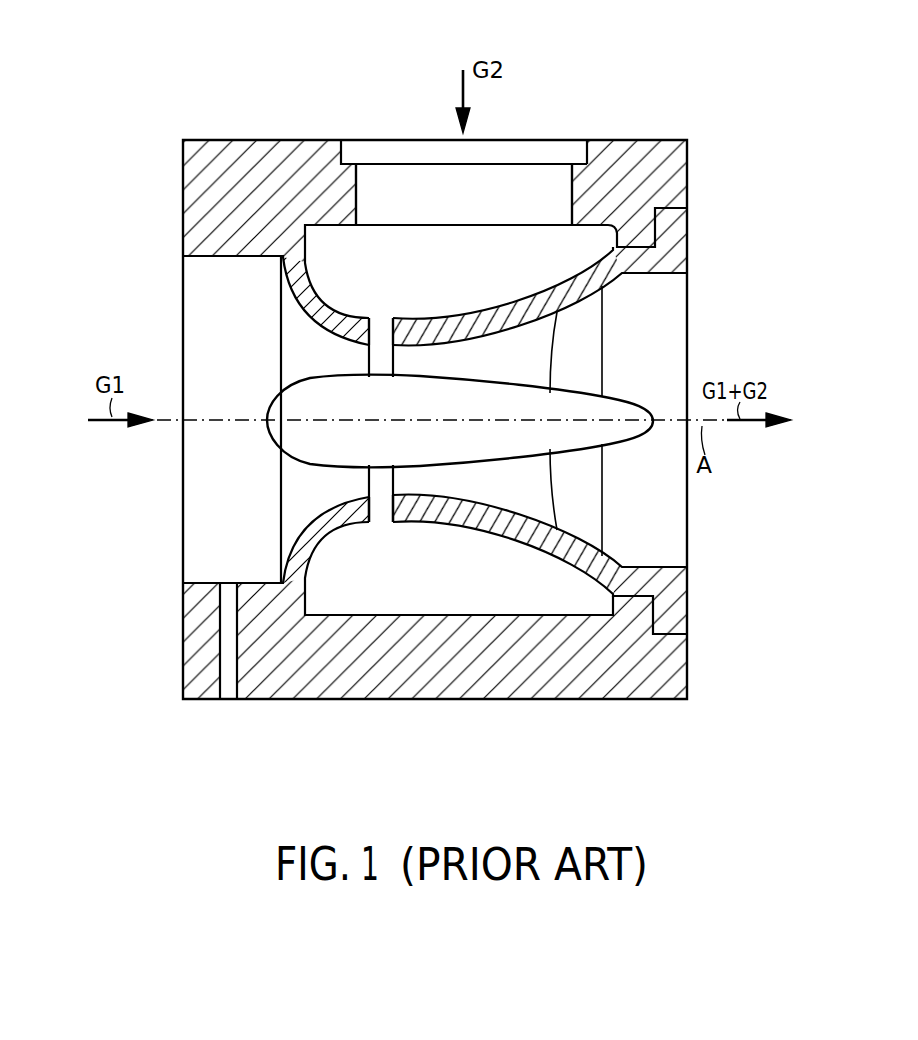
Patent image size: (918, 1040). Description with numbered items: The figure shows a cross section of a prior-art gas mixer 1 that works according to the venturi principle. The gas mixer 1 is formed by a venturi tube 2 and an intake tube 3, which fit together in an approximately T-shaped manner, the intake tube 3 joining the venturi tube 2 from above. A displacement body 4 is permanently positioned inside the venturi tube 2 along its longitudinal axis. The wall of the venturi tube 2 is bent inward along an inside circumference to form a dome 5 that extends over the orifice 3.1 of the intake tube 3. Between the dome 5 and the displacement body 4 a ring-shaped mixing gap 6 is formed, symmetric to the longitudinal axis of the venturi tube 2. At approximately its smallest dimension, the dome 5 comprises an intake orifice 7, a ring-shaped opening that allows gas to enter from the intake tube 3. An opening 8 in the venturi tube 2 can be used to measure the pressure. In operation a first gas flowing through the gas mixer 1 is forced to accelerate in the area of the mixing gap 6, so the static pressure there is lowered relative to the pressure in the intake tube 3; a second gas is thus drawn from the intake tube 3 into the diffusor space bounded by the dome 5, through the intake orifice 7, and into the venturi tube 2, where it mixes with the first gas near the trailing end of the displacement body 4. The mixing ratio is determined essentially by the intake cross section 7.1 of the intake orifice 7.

The gas mixer 1 is at (687, 66).
The venturi tube 2 is at (687, 595).
The intake tube 3 is at (630, 140).
The orifice 3.1 is at (498, 223).
The displacement body 4 is at (282, 402).
The dome 5 is at (462, 299).
The mixing gap 6 is at (405, 357).
The intake orifice 7 is at (382, 330).
The intake cross section 7.1 is at (380, 493).
The opening 8 is at (228, 694).